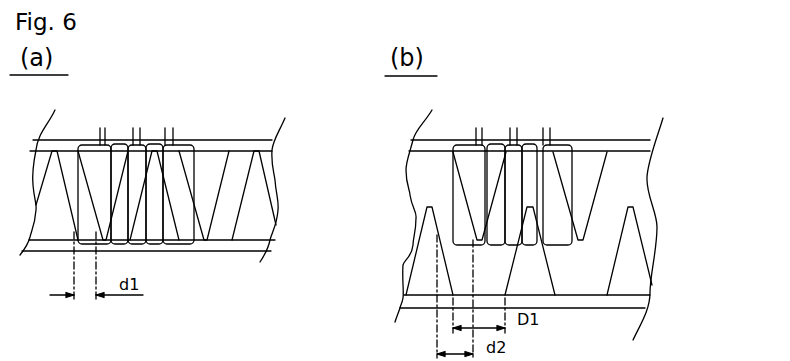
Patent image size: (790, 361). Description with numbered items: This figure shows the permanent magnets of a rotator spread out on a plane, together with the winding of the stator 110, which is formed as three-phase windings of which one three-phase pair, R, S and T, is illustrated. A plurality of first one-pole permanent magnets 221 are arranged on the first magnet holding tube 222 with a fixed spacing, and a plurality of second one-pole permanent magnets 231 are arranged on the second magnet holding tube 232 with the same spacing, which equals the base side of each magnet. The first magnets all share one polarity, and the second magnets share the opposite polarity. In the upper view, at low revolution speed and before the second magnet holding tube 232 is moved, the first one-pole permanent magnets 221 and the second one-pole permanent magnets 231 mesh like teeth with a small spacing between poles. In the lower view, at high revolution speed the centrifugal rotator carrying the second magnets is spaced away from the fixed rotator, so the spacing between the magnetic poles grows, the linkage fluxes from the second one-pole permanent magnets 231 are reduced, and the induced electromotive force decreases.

The stator 110 is at (325, 158).
The first one-pole permanent magnets 221 is at (213, 172).
The first magnet holding tube 222 is at (250, 145).
The second one-pole permanent magnets 231 is at (258, 222).
The second magnet holding tube 232 is at (258, 247).